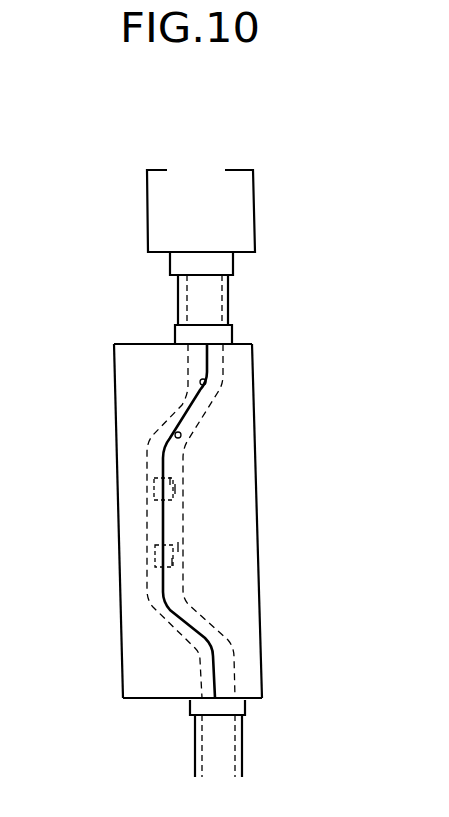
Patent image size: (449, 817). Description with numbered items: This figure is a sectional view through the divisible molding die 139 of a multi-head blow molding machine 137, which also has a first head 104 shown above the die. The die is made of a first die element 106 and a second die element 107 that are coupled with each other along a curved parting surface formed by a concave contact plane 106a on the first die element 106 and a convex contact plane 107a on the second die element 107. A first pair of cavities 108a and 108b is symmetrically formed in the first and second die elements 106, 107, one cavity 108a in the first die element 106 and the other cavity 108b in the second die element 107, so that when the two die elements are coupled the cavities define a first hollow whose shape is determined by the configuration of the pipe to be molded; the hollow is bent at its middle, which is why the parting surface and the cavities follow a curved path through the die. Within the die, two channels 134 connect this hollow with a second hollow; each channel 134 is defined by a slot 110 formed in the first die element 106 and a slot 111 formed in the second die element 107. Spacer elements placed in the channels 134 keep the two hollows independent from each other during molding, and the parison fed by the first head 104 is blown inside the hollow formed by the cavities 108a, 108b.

The first head 104 is at (147, 193).
The multi-head blow molding machine 137 is at (253, 128).
The divisible molding die 139 is at (102, 321).
The first die element 106 is at (116, 591).
The second die element 107 is at (266, 620).
The concave contact plane 106a is at (176, 432).
The convex contact plane 107a is at (206, 381).
The cavity 108a is at (147, 458).
The cavity 108b is at (183, 458).
The slot 110 is at (156, 491).
The slot 111 is at (175, 489).
The channels 134 is at (170, 481).